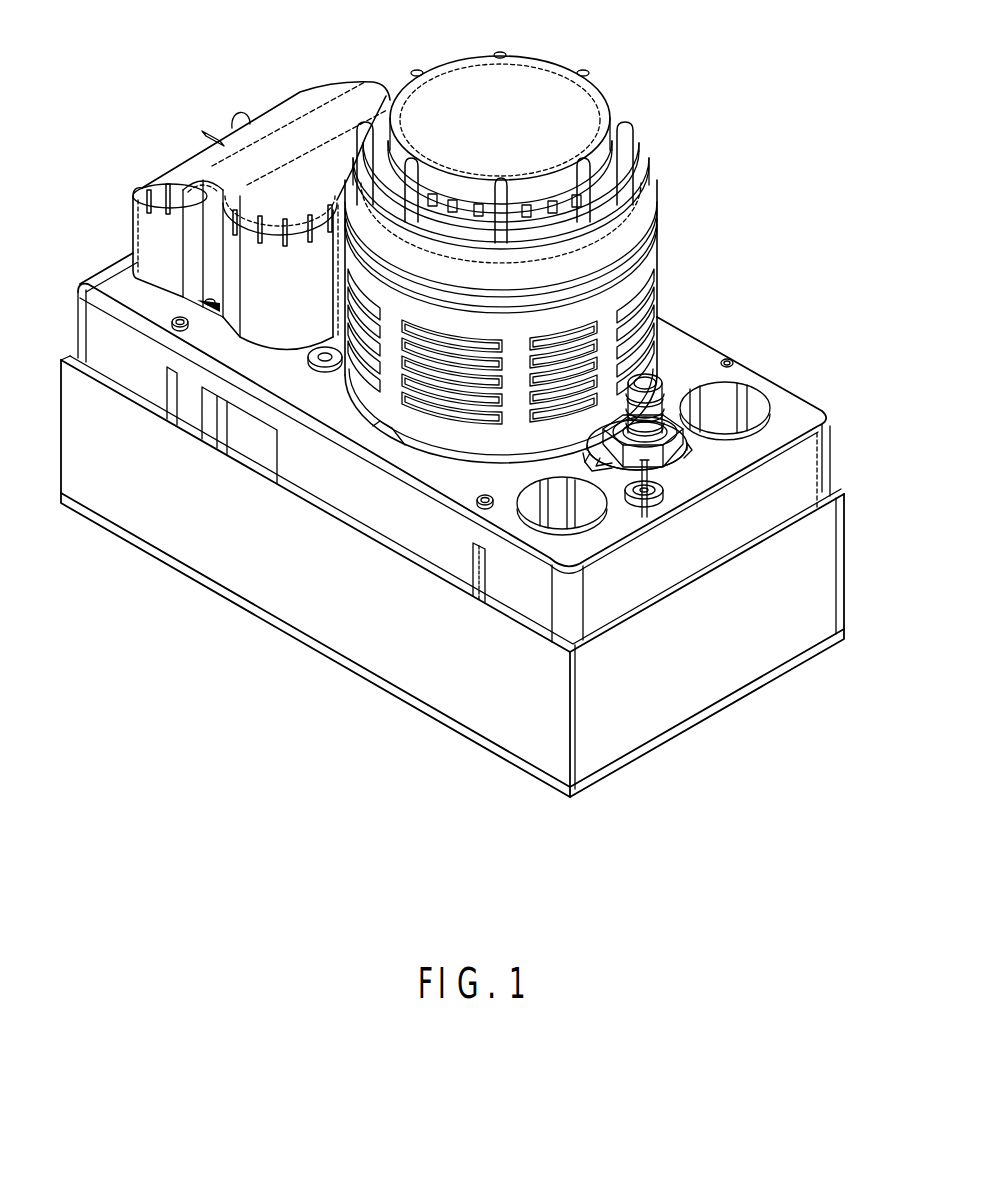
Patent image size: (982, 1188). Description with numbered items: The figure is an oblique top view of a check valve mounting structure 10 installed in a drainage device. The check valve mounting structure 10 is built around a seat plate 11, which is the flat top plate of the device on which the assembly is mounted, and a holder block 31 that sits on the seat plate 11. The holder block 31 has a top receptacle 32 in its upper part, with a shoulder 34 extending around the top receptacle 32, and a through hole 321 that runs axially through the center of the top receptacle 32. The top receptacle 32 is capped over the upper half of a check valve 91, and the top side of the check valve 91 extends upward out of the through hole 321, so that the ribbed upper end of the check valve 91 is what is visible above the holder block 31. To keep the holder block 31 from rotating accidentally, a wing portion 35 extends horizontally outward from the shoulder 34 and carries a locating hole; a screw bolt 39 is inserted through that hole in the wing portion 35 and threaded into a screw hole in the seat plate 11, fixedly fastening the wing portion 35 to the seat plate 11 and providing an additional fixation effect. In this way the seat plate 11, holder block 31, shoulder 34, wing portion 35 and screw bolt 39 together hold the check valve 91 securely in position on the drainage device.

The check valve mounting structure 10 is at (443, 469).
The seat plate 11 is at (477, 480).
The holder block 31 is at (683, 415).
The top receptacle 32 is at (673, 442).
The through hole 321 is at (662, 455).
The shoulder 34 is at (672, 447).
The wing portion 35 is at (633, 479).
The screw bolt 39 is at (655, 462).
The check valve 91 is at (665, 364).